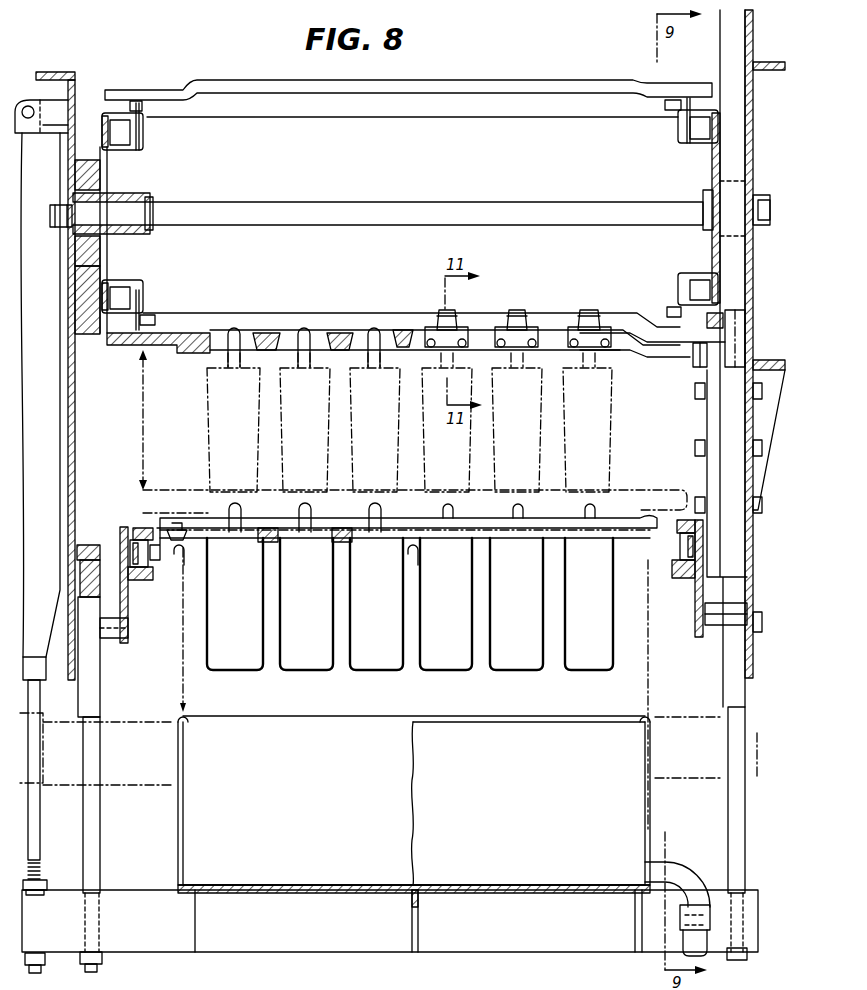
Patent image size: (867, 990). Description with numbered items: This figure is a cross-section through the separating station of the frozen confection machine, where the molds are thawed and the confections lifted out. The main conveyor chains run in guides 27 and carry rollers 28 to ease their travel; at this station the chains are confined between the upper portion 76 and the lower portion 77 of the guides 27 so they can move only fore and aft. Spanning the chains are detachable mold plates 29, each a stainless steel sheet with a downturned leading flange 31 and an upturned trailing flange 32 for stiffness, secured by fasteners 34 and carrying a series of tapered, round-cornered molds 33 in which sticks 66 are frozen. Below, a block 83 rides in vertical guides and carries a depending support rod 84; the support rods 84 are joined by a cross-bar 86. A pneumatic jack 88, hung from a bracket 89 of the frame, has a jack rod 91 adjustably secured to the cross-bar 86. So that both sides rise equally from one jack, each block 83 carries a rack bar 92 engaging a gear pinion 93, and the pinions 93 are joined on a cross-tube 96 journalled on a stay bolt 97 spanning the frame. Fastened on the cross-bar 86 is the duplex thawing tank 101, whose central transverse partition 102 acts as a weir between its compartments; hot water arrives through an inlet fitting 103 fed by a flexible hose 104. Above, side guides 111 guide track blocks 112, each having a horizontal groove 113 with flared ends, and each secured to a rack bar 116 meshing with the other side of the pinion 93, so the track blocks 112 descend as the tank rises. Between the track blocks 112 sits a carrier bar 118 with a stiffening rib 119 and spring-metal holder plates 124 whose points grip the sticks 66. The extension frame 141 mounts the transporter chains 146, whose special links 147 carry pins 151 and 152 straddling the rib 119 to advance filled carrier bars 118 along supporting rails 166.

The guides 27 is at (129, 610).
The rollers 28 is at (148, 562).
The mold plates 29 is at (332, 530).
The flange 31 is at (410, 556).
The flange 32 is at (503, 507).
The molds 33 is at (262, 690).
The fasteners 34 is at (170, 528).
The sticks 66 is at (248, 326).
The upper portion 76 is at (138, 528).
The lower portion 77 is at (138, 604).
The block 83 is at (100, 585).
The support rod 84 is at (96, 866).
The cross-bar 86 is at (146, 950).
The pneumatic jack 88 is at (50, 570).
The bracket 89 is at (50, 104).
The jack rod 91 is at (37, 772).
The rack bar 92 is at (96, 180).
The gear pinion 93 is at (98, 195).
The cross-tube 96 is at (148, 205).
The stay bolt 97 is at (149, 213).
The duplex thawing tank 101 is at (179, 805).
The central transverse partition 102 is at (510, 803).
The inlet fitting 103 is at (688, 872).
The flexible hose 104 is at (708, 928).
The side guides 111 is at (715, 416).
The track blocks 112 is at (745, 330).
The horizontal groove 113 is at (725, 338).
The rack bar 116 is at (740, 152).
The carrier bar 118 is at (570, 82).
The stiffening rib 119 is at (455, 115).
The holder plate 124 is at (465, 327).
The extension frame 141 is at (75, 97).
The chains 146 is at (136, 139).
The special links 147 is at (142, 303).
The pin 151 is at (160, 97).
The pin 152 is at (157, 320).
The rails 166 is at (130, 366).